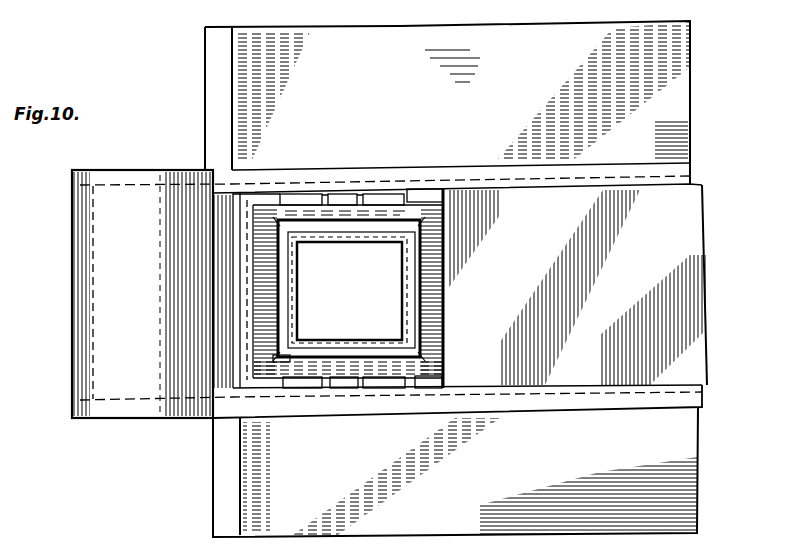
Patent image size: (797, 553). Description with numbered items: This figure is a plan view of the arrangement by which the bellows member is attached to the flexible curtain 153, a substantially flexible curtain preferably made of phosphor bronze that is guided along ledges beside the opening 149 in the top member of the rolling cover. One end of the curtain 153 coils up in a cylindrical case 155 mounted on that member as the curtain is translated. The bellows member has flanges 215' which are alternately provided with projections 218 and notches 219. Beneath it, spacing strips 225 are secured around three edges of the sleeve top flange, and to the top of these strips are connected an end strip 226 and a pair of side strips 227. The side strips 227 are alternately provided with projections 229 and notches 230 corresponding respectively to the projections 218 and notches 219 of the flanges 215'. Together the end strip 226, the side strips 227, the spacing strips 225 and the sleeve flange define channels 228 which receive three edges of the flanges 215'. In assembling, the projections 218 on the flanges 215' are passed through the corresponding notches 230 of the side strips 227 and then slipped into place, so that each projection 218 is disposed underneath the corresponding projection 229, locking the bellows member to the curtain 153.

The opening 149 is at (587, 175).
The flexible curtain 153 is at (680, 242).
The cylindrical case 155 is at (85, 313).
The flanges 215' is at (386, 291).
The projections 218 is at (342, 197).
The notches 219 is at (390, 197).
The spacing strips 225 is at (240, 369).
The end strip 226 is at (248, 302).
The side strips 227 is at (430, 386).
The channels 228 is at (285, 358).
The projections 229 is at (348, 386).
The notches 230 is at (393, 386).